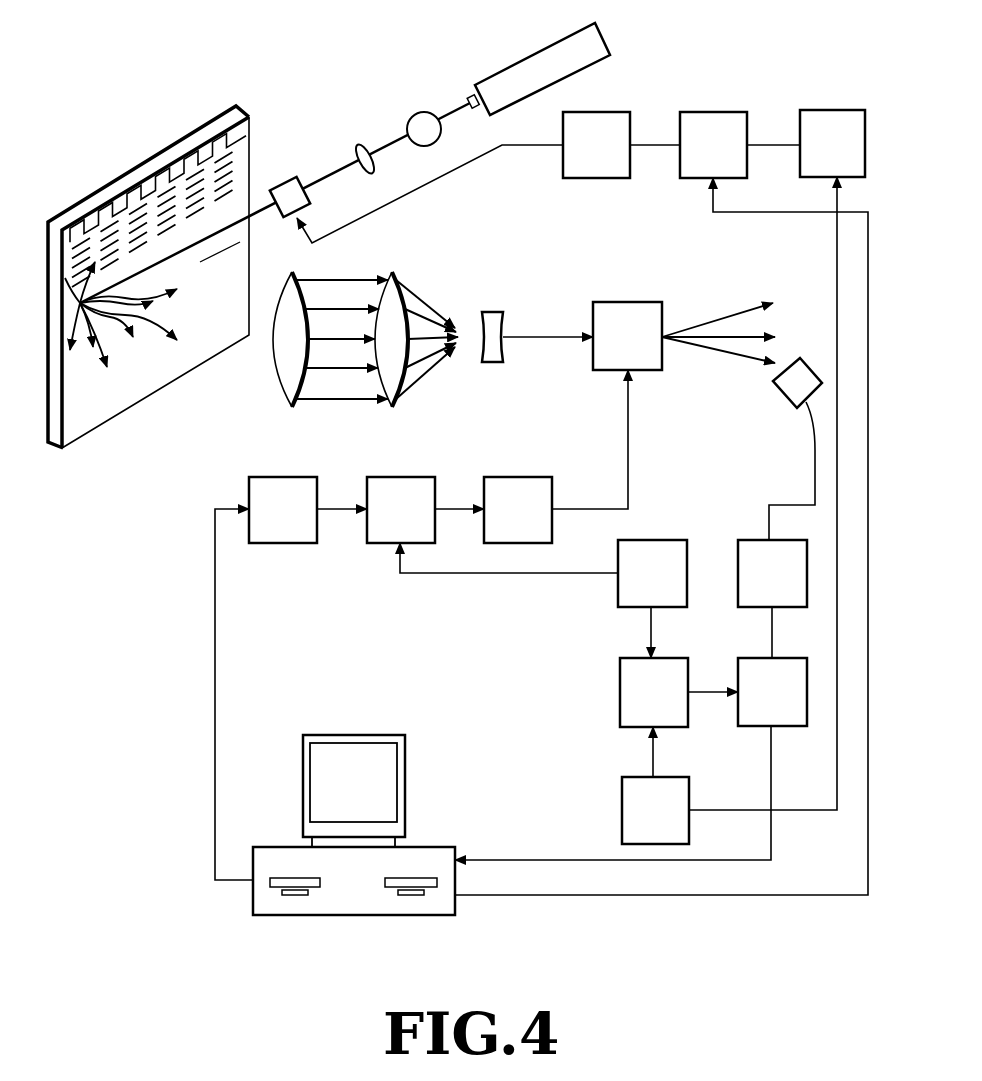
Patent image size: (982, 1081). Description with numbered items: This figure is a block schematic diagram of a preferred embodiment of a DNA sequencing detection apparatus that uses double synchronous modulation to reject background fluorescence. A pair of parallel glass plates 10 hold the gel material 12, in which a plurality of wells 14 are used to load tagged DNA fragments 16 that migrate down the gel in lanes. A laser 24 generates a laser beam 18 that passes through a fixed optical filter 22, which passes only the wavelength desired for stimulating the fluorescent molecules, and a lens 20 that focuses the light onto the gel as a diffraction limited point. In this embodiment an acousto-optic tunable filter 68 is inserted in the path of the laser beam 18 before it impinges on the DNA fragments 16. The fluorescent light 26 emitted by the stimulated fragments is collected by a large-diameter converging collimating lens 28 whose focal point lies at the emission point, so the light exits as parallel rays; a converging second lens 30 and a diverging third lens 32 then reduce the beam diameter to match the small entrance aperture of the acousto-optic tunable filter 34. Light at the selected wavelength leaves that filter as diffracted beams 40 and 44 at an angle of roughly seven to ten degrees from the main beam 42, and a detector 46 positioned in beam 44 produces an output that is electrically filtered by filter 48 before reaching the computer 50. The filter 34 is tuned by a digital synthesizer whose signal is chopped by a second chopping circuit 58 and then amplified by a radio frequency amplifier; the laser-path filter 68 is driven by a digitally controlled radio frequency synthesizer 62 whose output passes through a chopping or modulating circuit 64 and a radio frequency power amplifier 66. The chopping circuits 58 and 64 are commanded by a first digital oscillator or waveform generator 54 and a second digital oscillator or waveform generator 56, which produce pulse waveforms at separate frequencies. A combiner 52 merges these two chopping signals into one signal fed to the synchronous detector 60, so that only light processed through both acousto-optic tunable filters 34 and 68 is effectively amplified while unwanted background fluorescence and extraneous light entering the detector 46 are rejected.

The glass plates 10 is at (236, 109).
The gel material 12 is at (47, 236).
The wells 14 is at (198, 157).
The DNA fragments 16 is at (228, 158).
The laser beam 18 is at (229, 234).
The lens 20 is at (361, 145).
The fixed optical filter 22 is at (421, 113).
The laser 24 is at (522, 65).
The fluorescent light 26 is at (121, 331).
The converging collimating lens 28 is at (282, 380).
The second lens 30 is at (398, 270).
The third lens 32 is at (498, 312).
The acousto-optic tunable filter 34 is at (600, 302).
The diffracted beam 40 is at (722, 318).
The main beam 42 is at (770, 330).
The diffracted beam 44 is at (713, 355).
The detector 46 is at (785, 402).
The filter 48 is at (756, 540).
The computer 50 is at (412, 750).
The combiner 52 is at (620, 680).
The first digital oscillator or waveform generator 54 is at (662, 540).
The second digital oscillator or waveform generator 56 is at (622, 800).
The second chopping circuit 58 is at (390, 477).
The synchronous detector 60 is at (748, 727).
The digitally controlled radio frequency synthesizer 62 is at (800, 110).
The chopping or modulating circuit 64 is at (690, 112).
The radio frequency power amplifier 66 is at (563, 178).
The acousto-optic tunable filter 68 is at (286, 215).